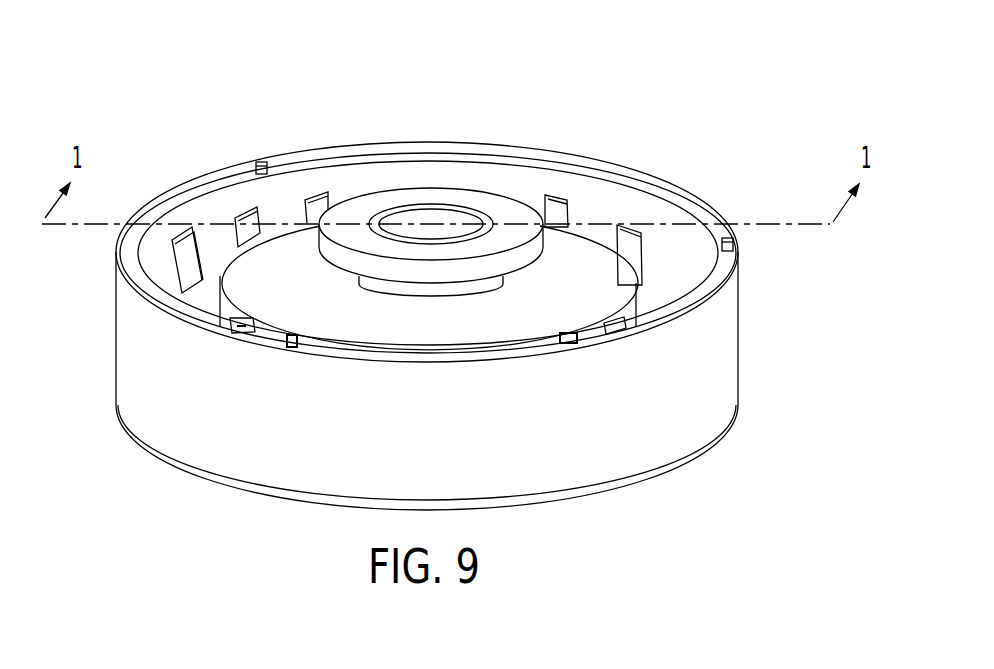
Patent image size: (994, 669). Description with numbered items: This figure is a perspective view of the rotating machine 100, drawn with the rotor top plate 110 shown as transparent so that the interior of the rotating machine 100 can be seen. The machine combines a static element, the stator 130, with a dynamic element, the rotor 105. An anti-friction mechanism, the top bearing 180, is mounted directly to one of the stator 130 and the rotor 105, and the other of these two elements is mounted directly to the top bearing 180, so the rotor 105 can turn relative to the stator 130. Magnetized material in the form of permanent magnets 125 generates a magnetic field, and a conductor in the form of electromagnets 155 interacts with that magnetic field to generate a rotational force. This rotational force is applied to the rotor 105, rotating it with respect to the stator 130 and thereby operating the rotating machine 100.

The rotating machine 100 is at (752, 100).
The rotor 105 is at (723, 350).
The rotor top plate 110 is at (575, 160).
The permanent magnets 125 is at (248, 215).
The stator 130 is at (735, 248).
The electromagnets 155 is at (232, 326).
The top bearing 180 is at (477, 200).